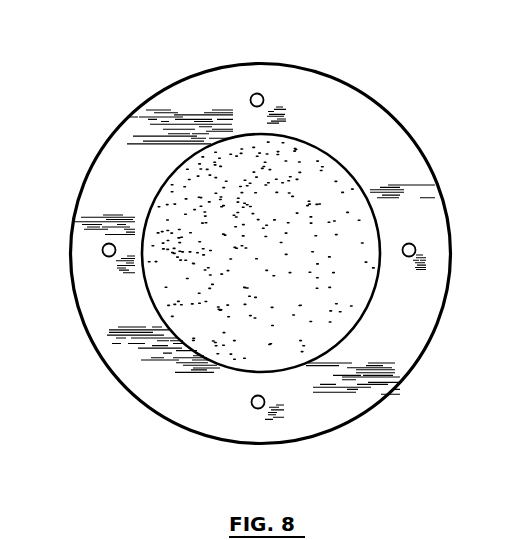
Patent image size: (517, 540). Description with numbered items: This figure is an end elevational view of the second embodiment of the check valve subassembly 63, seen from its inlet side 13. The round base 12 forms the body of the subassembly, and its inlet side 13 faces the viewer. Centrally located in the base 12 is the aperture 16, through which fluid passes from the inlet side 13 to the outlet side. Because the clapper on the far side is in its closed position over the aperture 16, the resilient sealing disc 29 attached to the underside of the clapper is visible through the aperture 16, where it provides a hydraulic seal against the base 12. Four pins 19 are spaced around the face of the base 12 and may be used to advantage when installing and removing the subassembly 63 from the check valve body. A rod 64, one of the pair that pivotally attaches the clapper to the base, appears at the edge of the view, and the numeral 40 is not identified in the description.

The base 12 is at (198, 72).
The inlet side 13 is at (402, 340).
The aperture 16 is at (360, 183).
The pins 19 is at (120, 254).
The resilient sealing disc 29 is at (165, 288).
The adjacent component 40 is at (0, 0).
The check valve subassembly 63 is at (346, 73).
The rods 64 is at (2, 538).